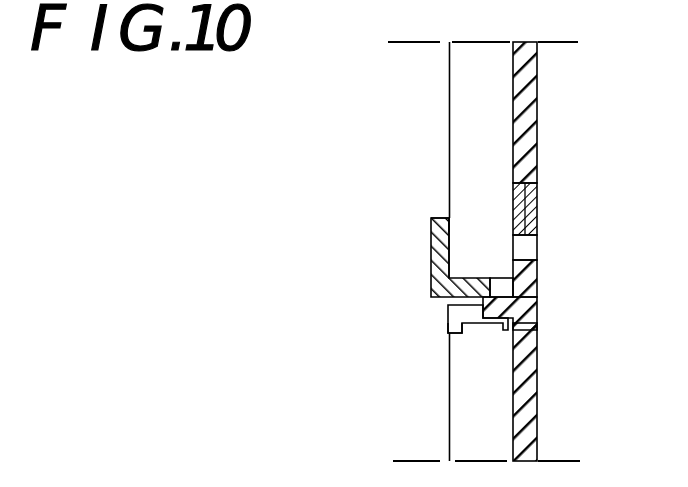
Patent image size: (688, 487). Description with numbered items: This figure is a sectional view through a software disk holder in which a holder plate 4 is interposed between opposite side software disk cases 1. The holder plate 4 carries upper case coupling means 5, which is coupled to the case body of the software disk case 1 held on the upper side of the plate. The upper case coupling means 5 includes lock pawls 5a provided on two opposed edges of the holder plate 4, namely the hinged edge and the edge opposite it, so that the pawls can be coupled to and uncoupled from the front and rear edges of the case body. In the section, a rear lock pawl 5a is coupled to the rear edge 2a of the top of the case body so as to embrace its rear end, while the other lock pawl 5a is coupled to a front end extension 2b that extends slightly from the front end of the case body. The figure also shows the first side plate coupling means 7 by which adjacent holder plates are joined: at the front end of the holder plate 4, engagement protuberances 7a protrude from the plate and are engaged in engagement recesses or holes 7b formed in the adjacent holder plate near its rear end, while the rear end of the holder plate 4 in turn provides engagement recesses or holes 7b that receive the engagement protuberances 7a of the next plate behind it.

The software disk case 1 is at (449, 133).
The rear edge of the top of the case body 2a is at (463, 252).
The front end extension 2b is at (538, 335).
The holder plate 4 is at (538, 108).
The upper case coupling means 5 is at (433, 286).
The lock pawl 5a is at (431, 228).
The first side plate coupling means 7 is at (538, 241).
The engagement protuberance 7a is at (538, 190).
The engagement recess or hole 7b is at (538, 252).